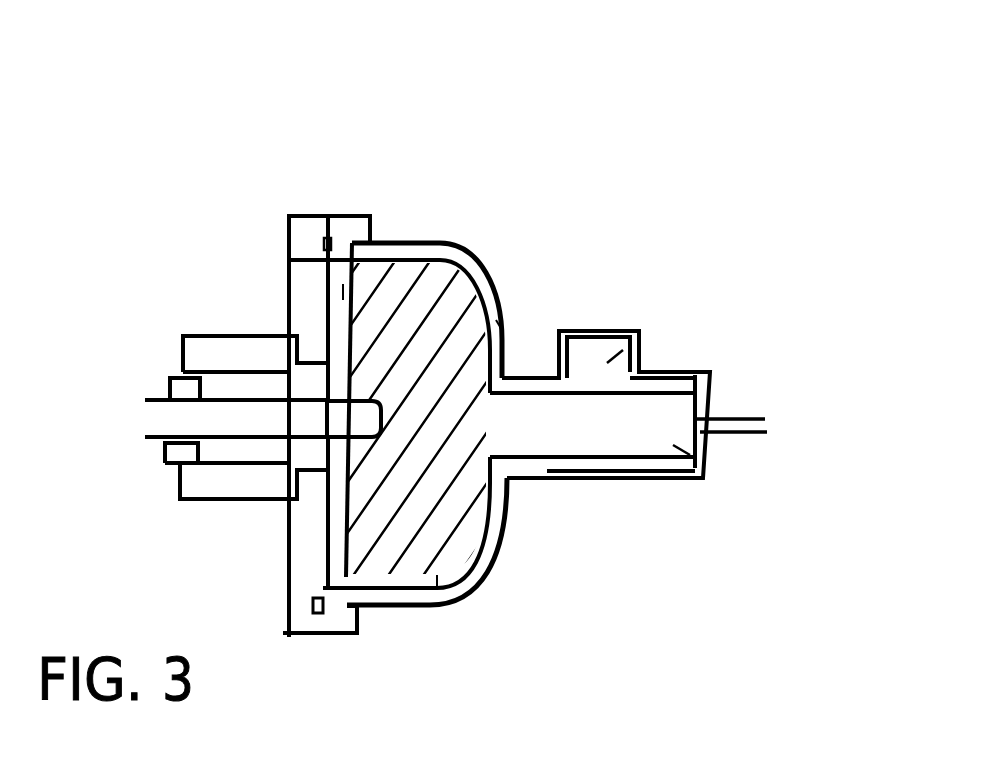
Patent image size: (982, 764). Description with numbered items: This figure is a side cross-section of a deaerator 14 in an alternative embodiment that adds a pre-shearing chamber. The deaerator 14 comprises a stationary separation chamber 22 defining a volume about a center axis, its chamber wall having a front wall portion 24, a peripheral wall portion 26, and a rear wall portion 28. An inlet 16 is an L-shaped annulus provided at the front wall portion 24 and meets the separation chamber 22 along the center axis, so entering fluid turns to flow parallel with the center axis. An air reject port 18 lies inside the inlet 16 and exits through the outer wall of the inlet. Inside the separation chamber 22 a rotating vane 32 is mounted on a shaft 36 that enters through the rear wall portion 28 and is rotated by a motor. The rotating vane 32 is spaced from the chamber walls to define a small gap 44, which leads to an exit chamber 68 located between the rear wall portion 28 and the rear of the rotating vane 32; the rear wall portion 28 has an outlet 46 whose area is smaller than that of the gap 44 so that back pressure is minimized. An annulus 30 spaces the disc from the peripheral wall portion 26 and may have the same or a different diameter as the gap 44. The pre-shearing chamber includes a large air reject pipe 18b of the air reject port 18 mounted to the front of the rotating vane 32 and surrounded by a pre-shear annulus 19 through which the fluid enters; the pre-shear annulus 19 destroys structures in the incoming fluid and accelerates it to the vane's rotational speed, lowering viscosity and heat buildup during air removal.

The deaerator 14 is at (277, 172).
The inlet 16 is at (640, 343).
The air reject port 18 is at (700, 414).
The air reject pipe 18b is at (693, 458).
The pre-shear annulus 19 is at (550, 479).
The separation chamber 22 is at (505, 260).
The front wall portion 24 is at (500, 322).
The peripheral wall portion 26 is at (403, 242).
The rear wall portion 28 is at (325, 558).
The annulus 30 is at (374, 240).
The rotating vane 32 is at (462, 513).
The shaft 36 is at (242, 420).
The gap 44 is at (433, 257).
The outlet 46 is at (306, 238).
The exit chamber 68 is at (343, 284).